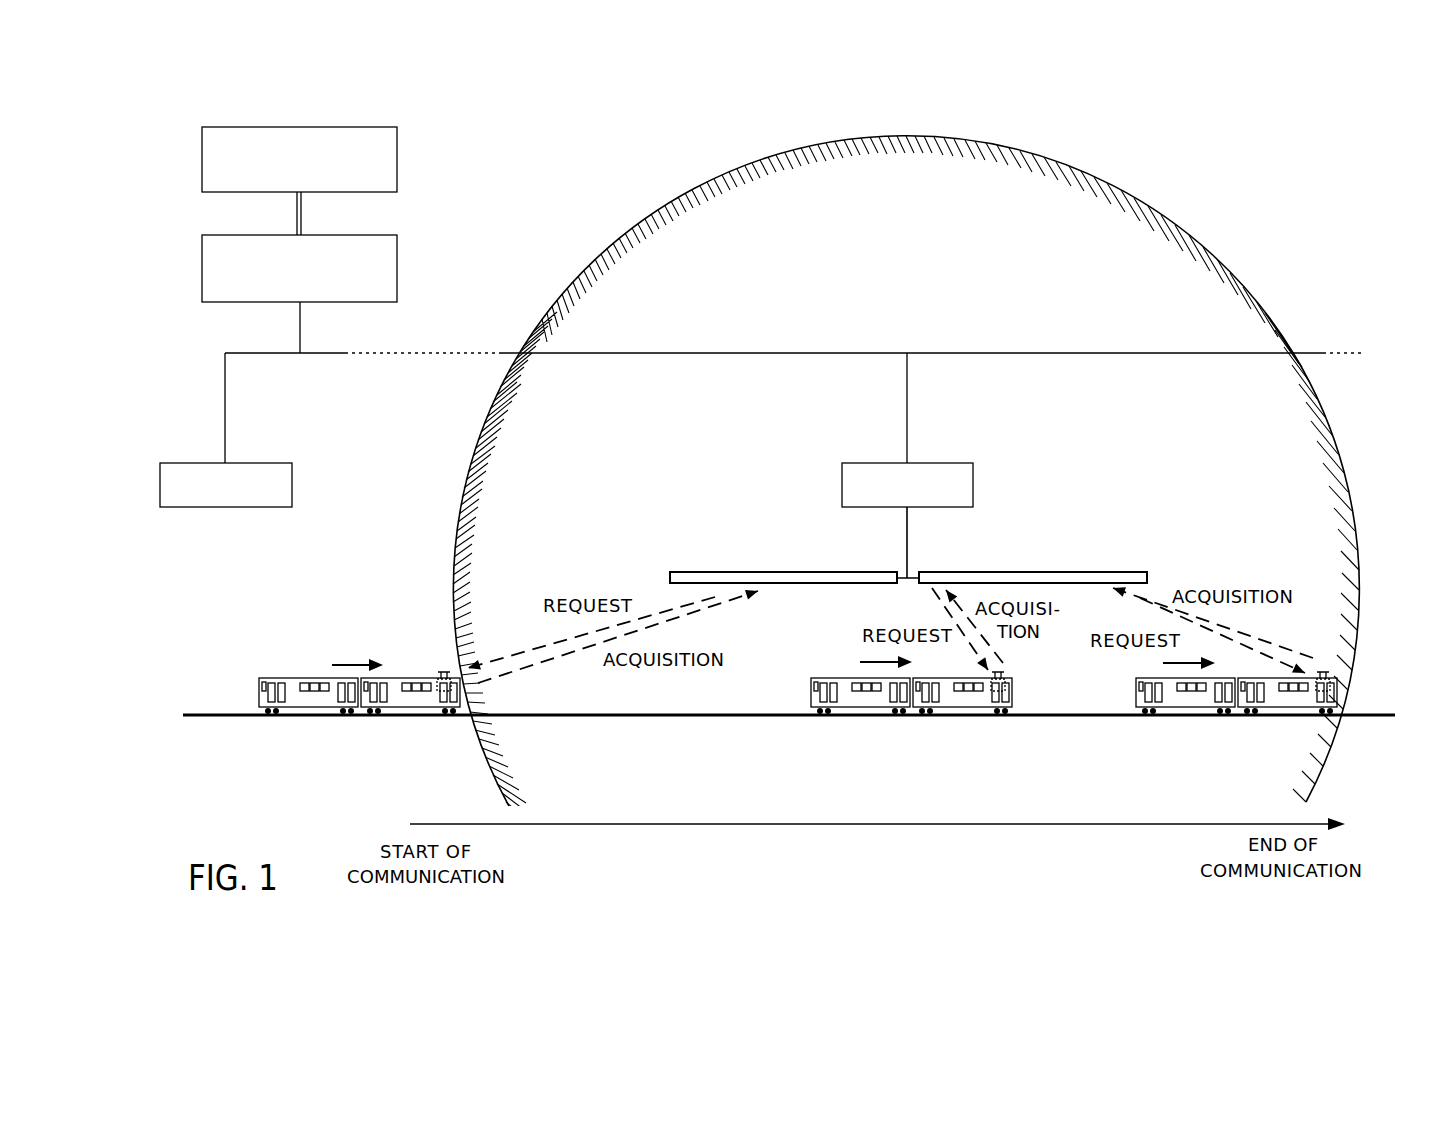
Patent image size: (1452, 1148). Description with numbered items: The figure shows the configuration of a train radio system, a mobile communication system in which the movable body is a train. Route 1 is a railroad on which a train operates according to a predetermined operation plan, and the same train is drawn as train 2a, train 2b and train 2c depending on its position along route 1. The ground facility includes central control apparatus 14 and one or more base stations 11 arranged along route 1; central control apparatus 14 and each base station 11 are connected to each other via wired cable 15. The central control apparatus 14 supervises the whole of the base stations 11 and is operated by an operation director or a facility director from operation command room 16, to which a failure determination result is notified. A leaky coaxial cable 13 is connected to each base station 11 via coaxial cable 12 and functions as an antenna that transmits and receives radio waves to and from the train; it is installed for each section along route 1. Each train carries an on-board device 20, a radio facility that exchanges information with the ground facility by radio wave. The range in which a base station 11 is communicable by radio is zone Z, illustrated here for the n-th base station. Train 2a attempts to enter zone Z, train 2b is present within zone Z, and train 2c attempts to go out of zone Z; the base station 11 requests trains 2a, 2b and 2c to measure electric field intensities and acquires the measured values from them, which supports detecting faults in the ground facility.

The route 1 is at (636, 718).
The train 2a is at (255, 670).
The train 2b is at (796, 673).
The train 2c is at (1353, 668).
The base station 11 is at (292, 487).
The coaxial cable 12 is at (910, 534).
The leaky coaxial cable 13 is at (786, 572).
The central control apparatus 14 is at (397, 245).
The wired cable 15 is at (943, 353).
The operation command room 16 is at (397, 140).
The on-board device 20 is at (1008, 686).
The zone Z is at (1178, 232).